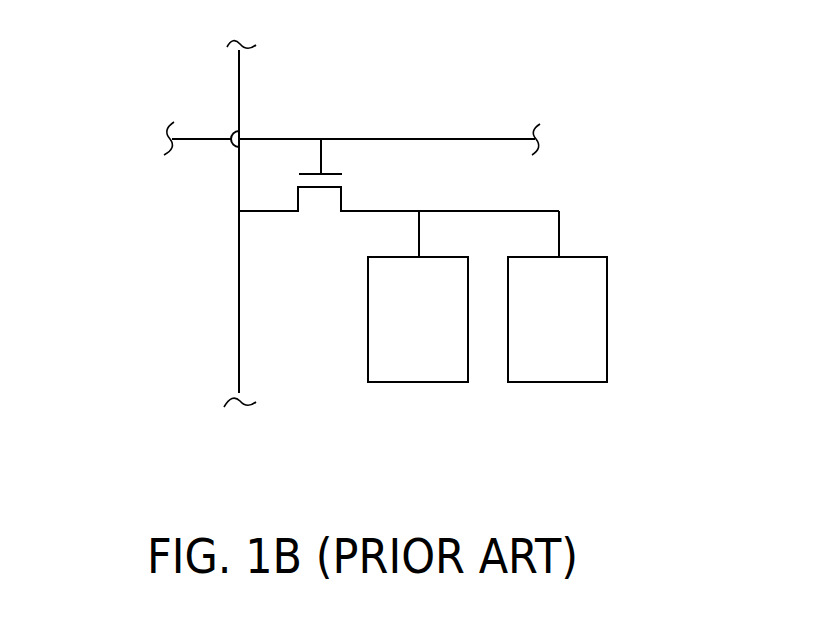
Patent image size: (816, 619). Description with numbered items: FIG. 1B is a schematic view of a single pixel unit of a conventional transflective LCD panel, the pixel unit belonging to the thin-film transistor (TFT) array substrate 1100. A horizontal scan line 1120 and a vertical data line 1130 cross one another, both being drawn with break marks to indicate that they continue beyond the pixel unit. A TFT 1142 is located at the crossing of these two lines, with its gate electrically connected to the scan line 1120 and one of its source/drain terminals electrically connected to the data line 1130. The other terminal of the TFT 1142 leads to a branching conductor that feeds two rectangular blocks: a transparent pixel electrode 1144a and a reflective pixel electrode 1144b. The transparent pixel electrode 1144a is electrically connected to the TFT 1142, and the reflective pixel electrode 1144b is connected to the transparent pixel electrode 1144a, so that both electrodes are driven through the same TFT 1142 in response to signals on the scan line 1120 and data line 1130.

The thin-film transistor (TFT) array substrate 1100 is at (686, 498).
The scan line 1120 is at (477, 139).
The data line 1130 is at (239, 275).
The TFT 1142 is at (282, 179).
The transparent pixel electrode 1144a is at (417, 382).
The reflective pixel electrode 1144b is at (557, 382).